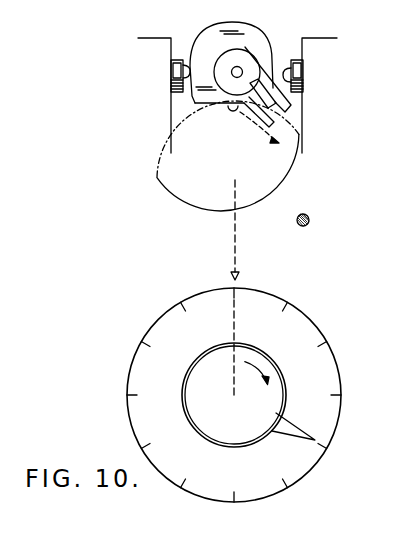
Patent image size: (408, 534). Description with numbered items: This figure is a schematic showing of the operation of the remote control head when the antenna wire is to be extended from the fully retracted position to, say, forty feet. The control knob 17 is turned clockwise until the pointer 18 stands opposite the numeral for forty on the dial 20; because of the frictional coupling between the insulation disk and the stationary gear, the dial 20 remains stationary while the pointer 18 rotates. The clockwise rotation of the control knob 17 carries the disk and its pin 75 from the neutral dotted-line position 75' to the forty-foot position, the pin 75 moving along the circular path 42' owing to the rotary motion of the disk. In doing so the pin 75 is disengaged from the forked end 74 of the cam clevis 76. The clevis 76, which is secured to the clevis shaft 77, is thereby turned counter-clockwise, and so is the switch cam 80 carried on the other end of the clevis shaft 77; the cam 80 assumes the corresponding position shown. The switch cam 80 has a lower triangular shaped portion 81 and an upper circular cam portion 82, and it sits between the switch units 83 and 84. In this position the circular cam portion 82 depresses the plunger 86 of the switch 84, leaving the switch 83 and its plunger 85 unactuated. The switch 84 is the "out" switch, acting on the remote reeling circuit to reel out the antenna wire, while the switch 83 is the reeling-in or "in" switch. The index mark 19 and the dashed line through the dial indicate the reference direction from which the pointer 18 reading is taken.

The switch unit 84 is at (138, 38).
The switch unit 83 is at (337, 38).
The switch plunger 86 is at (187, 64).
The switch plunger 85 is at (284, 72).
The switch cam 80 is at (202, 44).
The upper circular cam portion 82 is at (238, 22).
The cam clevis 76 is at (241, 50).
The clevis shaft 77 is at (244, 66).
The forked ends 74 is at (287, 112).
The lower triangular shaped portion 81 is at (219, 104).
The neutral dotted line position of pin 75' is at (221, 128).
The circular path of pin 42' is at (252, 156).
The pin 75 is at (318, 206).
The index mark 19 is at (231, 274).
The dial 20 is at (142, 428).
The control knob 17 is at (213, 350).
The pointer 18 is at (283, 432).